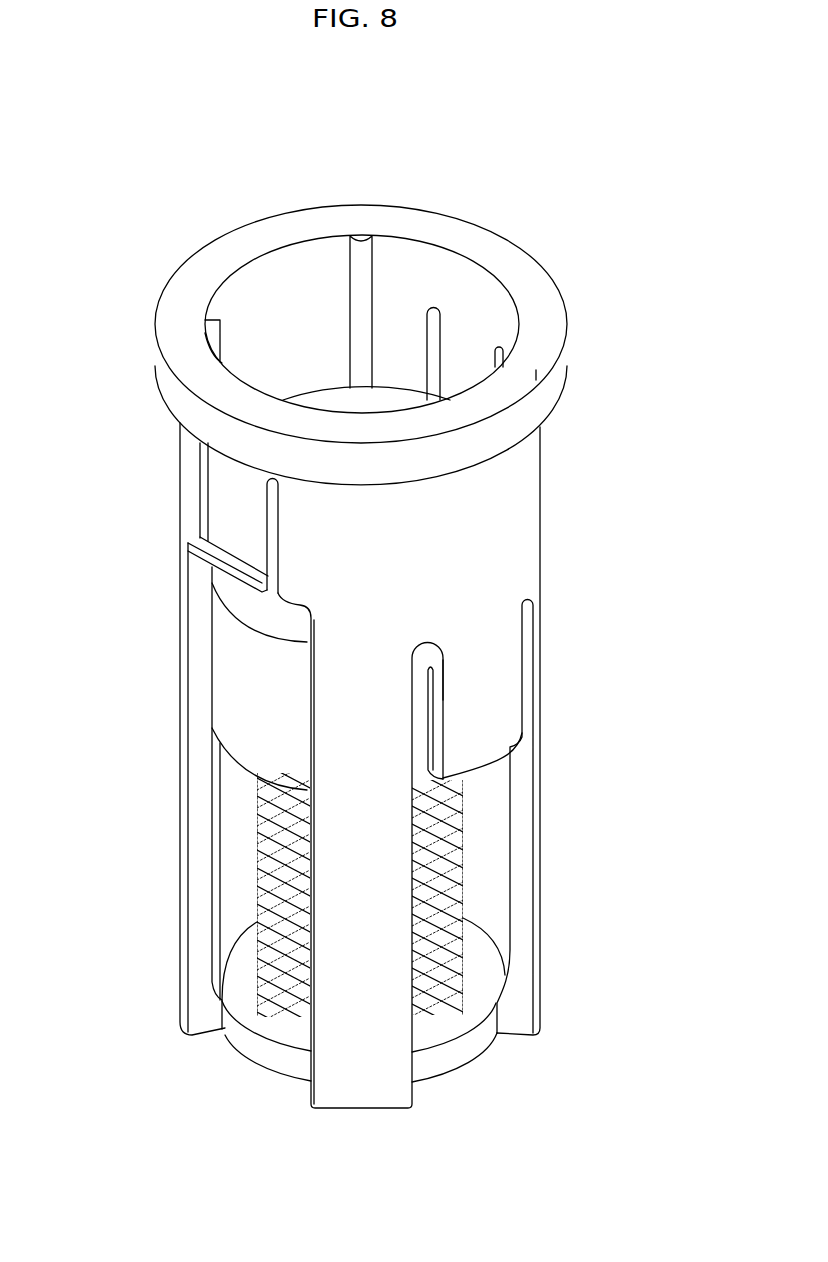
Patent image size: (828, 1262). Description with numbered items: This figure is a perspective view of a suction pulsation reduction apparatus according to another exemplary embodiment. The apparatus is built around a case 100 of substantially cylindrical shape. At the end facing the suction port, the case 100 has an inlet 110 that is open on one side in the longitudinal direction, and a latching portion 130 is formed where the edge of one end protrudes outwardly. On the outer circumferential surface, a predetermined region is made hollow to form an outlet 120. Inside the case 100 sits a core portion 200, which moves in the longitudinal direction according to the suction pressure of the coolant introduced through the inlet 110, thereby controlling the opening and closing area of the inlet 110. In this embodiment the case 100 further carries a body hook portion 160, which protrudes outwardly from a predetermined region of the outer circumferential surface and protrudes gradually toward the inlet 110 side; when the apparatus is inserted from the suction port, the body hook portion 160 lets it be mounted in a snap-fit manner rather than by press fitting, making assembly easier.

The case 100 is at (527, 477).
The inlet 110 is at (291, 275).
The outlet 120 is at (240, 852).
The latching portion 130 is at (553, 364).
The body hook portion 160 is at (203, 568).
The core portion 200 is at (223, 710).